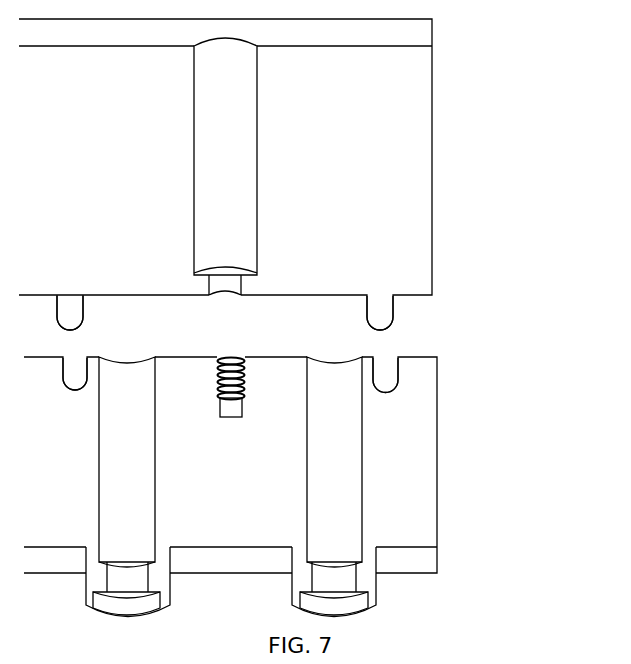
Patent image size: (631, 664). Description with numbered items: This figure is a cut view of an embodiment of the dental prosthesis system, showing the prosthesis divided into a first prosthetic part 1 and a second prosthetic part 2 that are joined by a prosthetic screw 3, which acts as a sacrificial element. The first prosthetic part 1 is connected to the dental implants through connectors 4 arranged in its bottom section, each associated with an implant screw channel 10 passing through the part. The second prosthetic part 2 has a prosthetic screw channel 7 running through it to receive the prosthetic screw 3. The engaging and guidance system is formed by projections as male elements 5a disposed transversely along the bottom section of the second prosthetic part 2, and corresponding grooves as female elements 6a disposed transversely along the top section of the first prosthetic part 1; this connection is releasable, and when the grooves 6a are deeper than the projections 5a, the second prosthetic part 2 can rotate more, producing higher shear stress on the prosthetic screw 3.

The first prosthetic part 1 is at (398, 487).
The second prosthetic part 2 is at (355, 150).
The prosthetic screw 3 is at (240, 377).
The connector 4 is at (305, 592).
The projection as male element 5a is at (401, 312).
The groove as female element 6a is at (382, 375).
The prosthetic screw channel 7 is at (232, 235).
The implant screw channel 10 is at (335, 531).